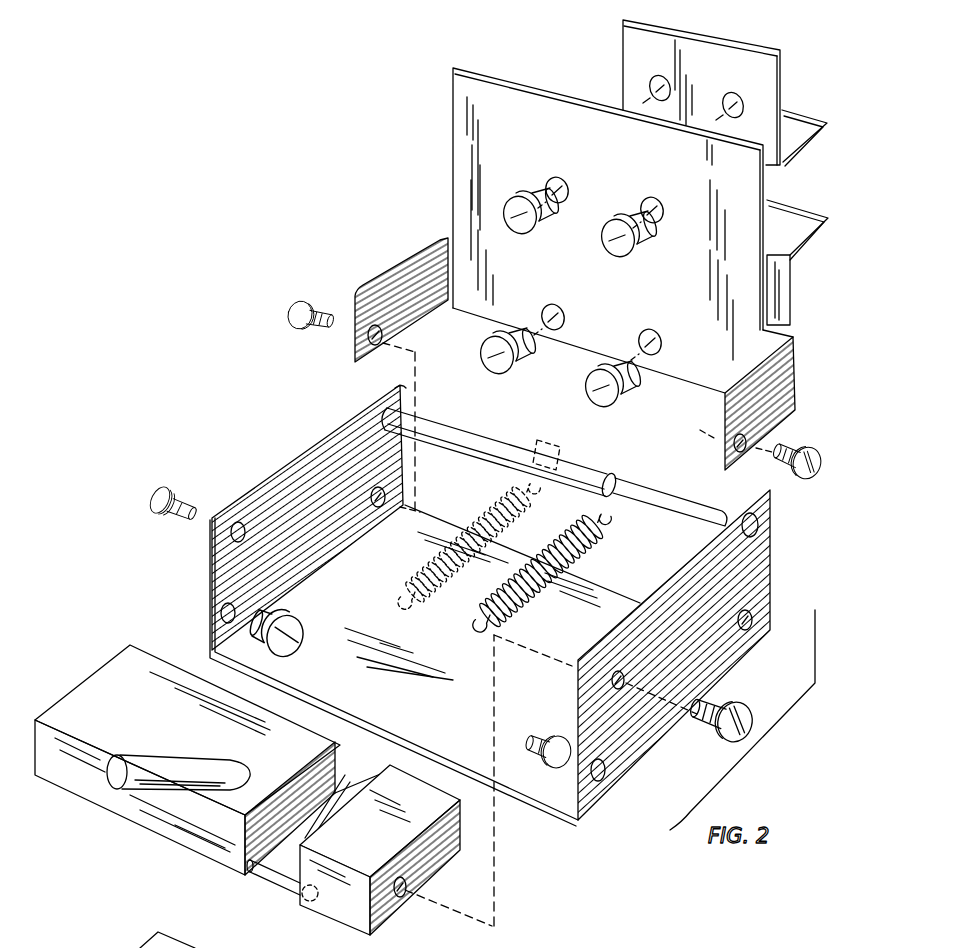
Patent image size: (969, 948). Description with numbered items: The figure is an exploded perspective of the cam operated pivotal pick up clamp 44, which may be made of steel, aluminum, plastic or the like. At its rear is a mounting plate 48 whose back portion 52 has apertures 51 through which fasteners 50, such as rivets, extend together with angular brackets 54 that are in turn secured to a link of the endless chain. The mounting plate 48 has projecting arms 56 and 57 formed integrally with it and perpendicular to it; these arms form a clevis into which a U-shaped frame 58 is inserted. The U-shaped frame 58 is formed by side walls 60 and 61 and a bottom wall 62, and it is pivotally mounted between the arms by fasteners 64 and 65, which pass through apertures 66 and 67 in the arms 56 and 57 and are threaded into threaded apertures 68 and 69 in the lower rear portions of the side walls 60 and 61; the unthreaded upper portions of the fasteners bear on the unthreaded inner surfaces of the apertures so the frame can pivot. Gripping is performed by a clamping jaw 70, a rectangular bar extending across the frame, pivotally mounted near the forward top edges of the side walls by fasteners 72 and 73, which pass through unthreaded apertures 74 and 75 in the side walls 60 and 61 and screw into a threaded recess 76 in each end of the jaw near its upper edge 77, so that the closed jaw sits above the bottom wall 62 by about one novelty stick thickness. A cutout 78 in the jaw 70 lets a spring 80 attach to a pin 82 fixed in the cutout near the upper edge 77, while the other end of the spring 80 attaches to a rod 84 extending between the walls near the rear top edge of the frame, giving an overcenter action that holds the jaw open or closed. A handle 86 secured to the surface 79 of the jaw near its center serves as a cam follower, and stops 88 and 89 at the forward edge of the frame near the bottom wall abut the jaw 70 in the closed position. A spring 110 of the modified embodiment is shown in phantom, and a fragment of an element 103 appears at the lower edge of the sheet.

The clamp 44 is at (312, 295).
The mounting plate 48 is at (447, 107).
The fasteners 50 is at (614, 236).
The apertures 51 is at (641, 205).
The back portion 52 is at (452, 161).
The angular brackets 54 is at (804, 140).
The projecting arm 56 is at (723, 412).
The projecting arm 57 is at (402, 262).
The U-shaped frame 58 is at (263, 483).
The side wall 60 is at (746, 573).
The side wall 61 is at (300, 456).
The bottom wall 62 is at (516, 556).
The fastener 64 is at (812, 454).
The fastener 65 is at (298, 324).
The aperture 66 is at (742, 450).
The aperture 67 is at (374, 346).
The threaded aperture 68 is at (752, 623).
The threaded aperture 69 is at (378, 488).
The clamping jaw 70 is at (80, 690).
The fastener 72 is at (739, 712).
The fastener 73 is at (162, 489).
The unthreaded aperture 74 is at (618, 689).
The unthreaded aperture 75 is at (246, 530).
The threaded recess 76 is at (401, 897).
The upper edge 77 is at (73, 777).
The cutout 78 is at (330, 774).
The surface 79 is at (165, 676).
The spring 80 is at (598, 532).
The pin 82 is at (272, 882).
The rod 84 is at (516, 452).
The handle 86 is at (155, 760).
The stop 88 is at (549, 738).
The stop 89 is at (292, 632).
The lever 103 is at (129, 940).
The spring 110 is at (502, 499).